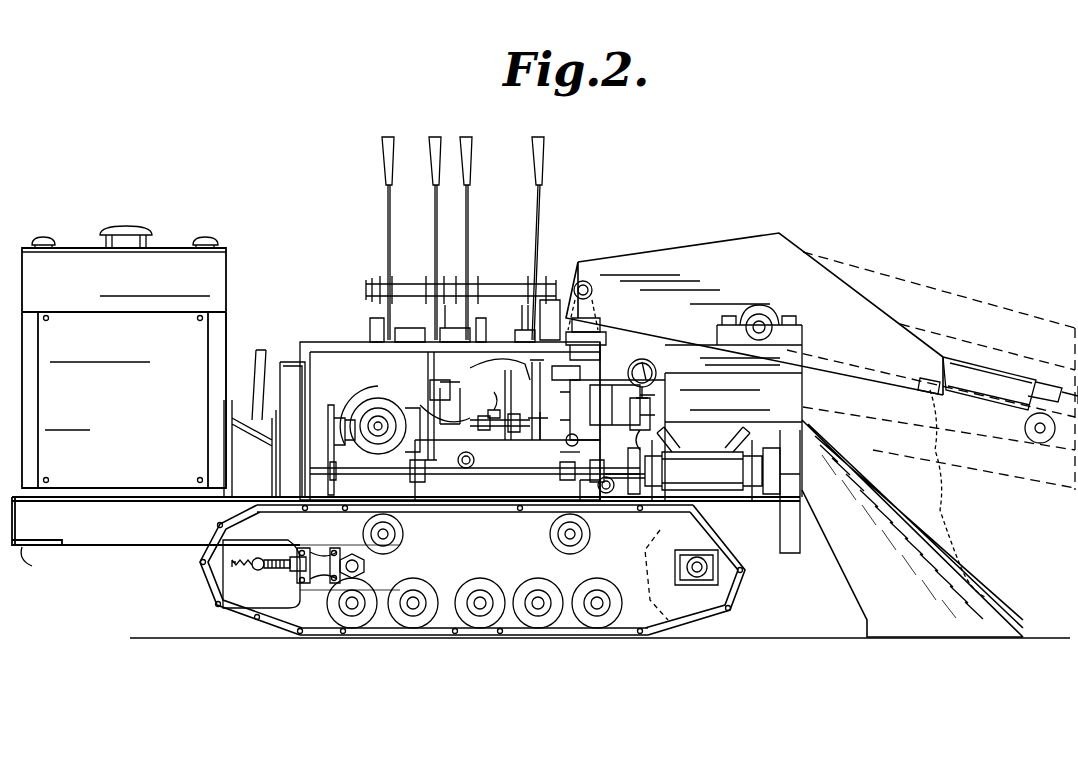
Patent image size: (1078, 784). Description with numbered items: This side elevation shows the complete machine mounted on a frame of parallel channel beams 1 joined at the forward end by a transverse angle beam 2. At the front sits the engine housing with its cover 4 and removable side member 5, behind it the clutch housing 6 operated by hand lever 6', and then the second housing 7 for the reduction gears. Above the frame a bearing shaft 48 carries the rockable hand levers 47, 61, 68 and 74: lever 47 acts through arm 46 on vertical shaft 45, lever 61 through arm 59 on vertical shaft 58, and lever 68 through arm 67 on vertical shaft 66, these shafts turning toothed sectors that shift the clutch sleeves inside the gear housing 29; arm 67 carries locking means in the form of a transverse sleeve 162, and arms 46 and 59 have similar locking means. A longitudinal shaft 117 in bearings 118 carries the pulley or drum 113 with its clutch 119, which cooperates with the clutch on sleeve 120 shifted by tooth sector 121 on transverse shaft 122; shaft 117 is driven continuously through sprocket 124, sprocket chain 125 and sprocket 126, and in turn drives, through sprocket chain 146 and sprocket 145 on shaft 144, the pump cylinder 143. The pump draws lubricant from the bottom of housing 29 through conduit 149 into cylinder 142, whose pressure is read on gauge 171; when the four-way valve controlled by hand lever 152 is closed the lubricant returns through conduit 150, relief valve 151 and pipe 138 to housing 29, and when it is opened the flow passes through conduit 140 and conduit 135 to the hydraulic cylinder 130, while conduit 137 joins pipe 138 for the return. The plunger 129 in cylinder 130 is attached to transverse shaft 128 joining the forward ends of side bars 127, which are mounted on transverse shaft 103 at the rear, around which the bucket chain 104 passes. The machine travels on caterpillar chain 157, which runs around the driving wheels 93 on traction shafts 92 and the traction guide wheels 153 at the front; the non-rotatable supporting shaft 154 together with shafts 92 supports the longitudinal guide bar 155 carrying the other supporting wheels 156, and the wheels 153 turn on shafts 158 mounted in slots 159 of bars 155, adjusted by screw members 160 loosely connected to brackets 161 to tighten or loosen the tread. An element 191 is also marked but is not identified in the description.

The parallel channel beams 1 is at (130, 538).
The transverse angle beam 2 is at (31, 564).
The cover 4 is at (165, 258).
The removable side member 5 is at (220, 332).
The clutch housing 6 is at (250, 448).
The hand lever 6' is at (266, 368).
The second housing 7 is at (292, 429).
The housing 29 is at (498, 428).
The vertical shaft 45 is at (517, 405).
The arm 46 is at (550, 300).
The hand lever 47 is at (543, 232).
The bearing shaft 48 is at (497, 292).
The vertical shaft 58 is at (440, 379).
The arm 59 is at (454, 322).
The hand lever 61 is at (470, 230).
The vertical shaft 66 is at (428, 372).
The arm 67 is at (410, 323).
The hand lever 68 is at (386, 213).
The hand lever 74 is at (434, 226).
The traction shafts 92 is at (718, 583).
The driving wheels 93 is at (735, 578).
The transverse shaft 103 is at (760, 318).
The bucket chain 104 is at (938, 300).
The pulley or drum 113 is at (680, 455).
The longitudinal shaft 117 is at (440, 480).
The bearings 118 is at (735, 475).
The clutch 119 is at (606, 470).
The sleeve 120 is at (567, 490).
The tooth sector 121 is at (557, 451).
The transverse shaft 122 is at (556, 436).
The sprocket 124 is at (336, 478).
The sprocket chain 125 is at (326, 412).
The sprocket 126 is at (345, 430).
The side bars 127 is at (738, 248).
The transverse shaft 128 is at (586, 290).
The plunger 129 is at (590, 324).
The hydraulic cylinder 130 is at (602, 336).
The conduit 135 is at (565, 372).
The conduit 137 is at (518, 525).
The pipe 138 is at (507, 470).
The conduit 140 is at (483, 404).
The cylinder 142 is at (650, 394).
The pump cylinder 143 is at (598, 392).
The shaft 144 is at (578, 410).
The sprocket 145 is at (500, 369).
The sprocket chain 146 is at (483, 458).
The conduit 149 is at (524, 400).
The conduit 150 is at (445, 423).
The relief valve 151 is at (405, 412).
The hand lever 152 is at (522, 306).
The traction guide wheels 153 is at (230, 594).
The non-rotatable supporting shaft 154 is at (364, 569).
The longitudinal guide bar 155 is at (450, 583).
The supporting wheels 156 is at (560, 655).
The caterpillar chain 157 is at (622, 632).
The shafts 158 is at (264, 562).
The slots 159 is at (247, 557).
The screw members 160 is at (270, 568).
The brackets 161 is at (322, 548).
The transverse sleeve 162 is at (370, 323).
The gauge 171 is at (656, 364).
The pipe 191 is at (528, 419).